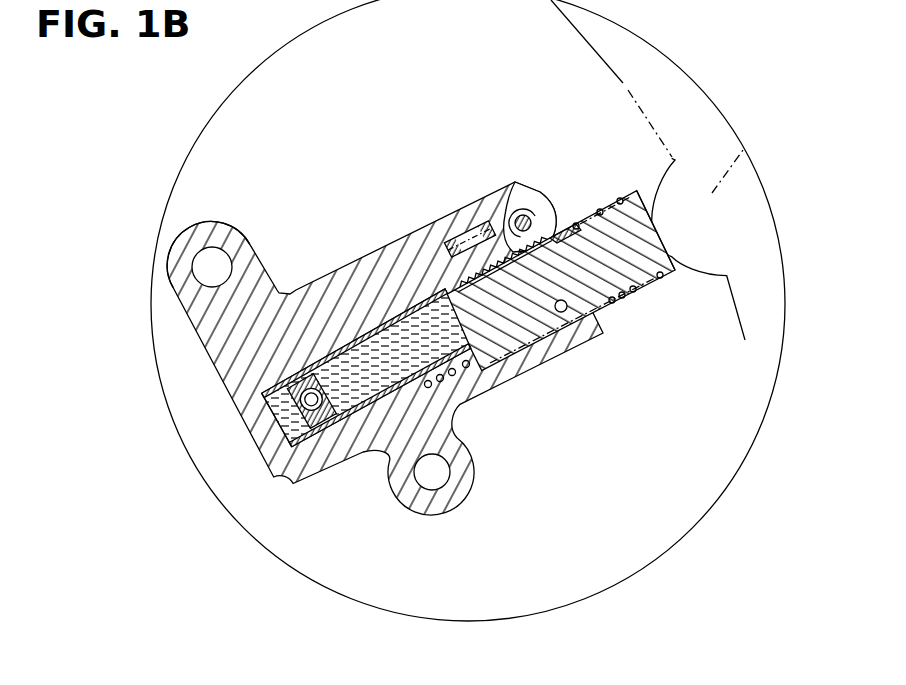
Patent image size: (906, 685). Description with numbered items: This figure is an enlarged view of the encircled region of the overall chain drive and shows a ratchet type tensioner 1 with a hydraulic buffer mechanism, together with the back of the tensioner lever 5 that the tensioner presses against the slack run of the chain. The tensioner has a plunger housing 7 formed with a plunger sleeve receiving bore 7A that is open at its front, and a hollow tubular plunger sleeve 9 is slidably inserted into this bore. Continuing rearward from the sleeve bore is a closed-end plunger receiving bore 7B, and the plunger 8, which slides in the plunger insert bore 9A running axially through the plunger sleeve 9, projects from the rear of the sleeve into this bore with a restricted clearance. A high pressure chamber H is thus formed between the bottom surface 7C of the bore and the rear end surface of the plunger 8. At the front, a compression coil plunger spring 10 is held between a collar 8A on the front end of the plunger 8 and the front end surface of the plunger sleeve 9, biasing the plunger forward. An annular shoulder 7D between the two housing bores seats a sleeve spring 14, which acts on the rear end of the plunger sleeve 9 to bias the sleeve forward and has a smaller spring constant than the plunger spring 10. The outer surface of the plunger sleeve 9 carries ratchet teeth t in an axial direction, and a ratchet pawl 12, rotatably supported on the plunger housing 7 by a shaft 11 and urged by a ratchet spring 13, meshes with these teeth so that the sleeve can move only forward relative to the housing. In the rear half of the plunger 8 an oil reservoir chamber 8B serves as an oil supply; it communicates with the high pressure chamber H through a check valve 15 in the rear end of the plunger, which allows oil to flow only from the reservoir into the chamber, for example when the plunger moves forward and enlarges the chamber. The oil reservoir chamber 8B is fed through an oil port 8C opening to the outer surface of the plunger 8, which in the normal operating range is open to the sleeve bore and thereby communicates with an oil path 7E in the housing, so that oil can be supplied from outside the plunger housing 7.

The tensioner 1 is at (565, 428).
The tensioner lever 5 is at (743, 151).
The plunger housing 7 is at (215, 347).
The plunger sleeve receiving bore 7A is at (428, 245).
The plunger receiving bore 7B is at (300, 330).
The bottom surface 7C is at (277, 405).
The annular shoulder 7D is at (357, 300).
The oil path 7E is at (412, 285).
The plunger 8 is at (518, 310).
The collar 8A is at (670, 270).
The oil reservoir chamber 8B is at (362, 400).
The oil port 8C is at (388, 296).
The plunger sleeve 9 is at (620, 301).
The plunger insert bore 9A is at (564, 311).
The plunger spring 10 is at (610, 207).
The shaft 11 is at (523, 212).
The ratchet pawl 12 is at (497, 222).
The ratchet spring 13 is at (470, 258).
The sleeve spring 14 is at (462, 390).
The check valve 15 is at (313, 450).
The high pressure chamber H is at (315, 412).
The ratchet teeth t is at (556, 235).